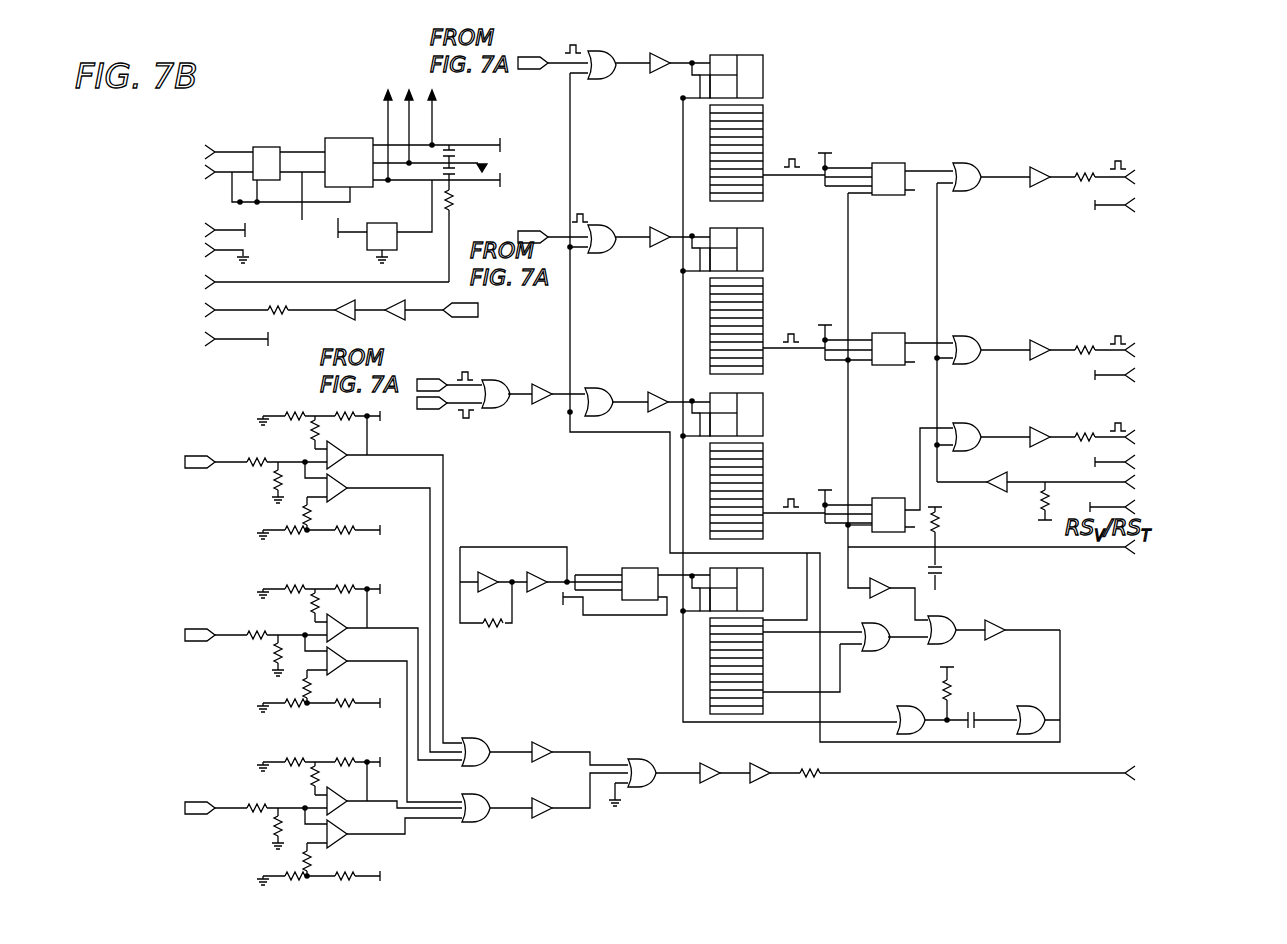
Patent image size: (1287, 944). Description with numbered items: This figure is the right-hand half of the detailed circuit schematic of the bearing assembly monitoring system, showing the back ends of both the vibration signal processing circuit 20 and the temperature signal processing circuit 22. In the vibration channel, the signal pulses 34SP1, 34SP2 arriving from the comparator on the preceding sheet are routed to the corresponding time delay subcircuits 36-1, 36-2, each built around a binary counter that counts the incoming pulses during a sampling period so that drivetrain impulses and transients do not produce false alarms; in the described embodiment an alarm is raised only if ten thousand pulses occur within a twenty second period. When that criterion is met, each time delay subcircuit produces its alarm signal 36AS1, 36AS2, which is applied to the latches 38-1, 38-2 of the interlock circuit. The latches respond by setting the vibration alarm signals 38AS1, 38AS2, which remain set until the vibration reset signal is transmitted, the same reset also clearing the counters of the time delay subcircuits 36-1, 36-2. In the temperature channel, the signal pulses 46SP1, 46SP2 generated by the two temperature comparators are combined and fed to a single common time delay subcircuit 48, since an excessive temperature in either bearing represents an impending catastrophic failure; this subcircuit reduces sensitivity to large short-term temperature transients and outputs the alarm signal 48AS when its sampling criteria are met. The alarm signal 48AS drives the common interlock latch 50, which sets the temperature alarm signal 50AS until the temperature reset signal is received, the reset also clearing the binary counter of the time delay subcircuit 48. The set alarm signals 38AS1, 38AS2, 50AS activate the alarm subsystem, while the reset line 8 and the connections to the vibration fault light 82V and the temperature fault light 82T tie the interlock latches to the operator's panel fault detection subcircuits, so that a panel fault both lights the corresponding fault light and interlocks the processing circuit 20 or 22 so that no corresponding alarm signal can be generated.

The reset signal line 8 is at (1160, 482).
The vibration signal processing circuit 20 is at (1022, 124).
The temperature signal processing circuit 22 is at (598, 492).
The signal pulse 34SP1 is at (590, 42).
The signal pulse 34SP2 is at (582, 211).
The time delay subcircuit 36-1 is at (765, 130).
The time delay subcircuit 36-2 is at (765, 292).
The alarm signal 36AS1 is at (798, 152).
The alarm signal 36AS2 is at (786, 332).
The latch 38-1 is at (892, 162).
The latch 38-2 is at (888, 332).
The vibration alarm signal 38AS1 is at (1122, 160).
The vibration alarm signal 38AS2 is at (1122, 338).
The signal pulse 46SP1 is at (465, 376).
The signal pulse 46SP2 is at (467, 420).
The time delay subcircuit 48 is at (767, 440).
The alarm signal 48AS is at (786, 496).
The interlock subcircuit 50 is at (887, 497).
The temperature alarm signal 50AS is at (1122, 426).
The vibration fault light 82V is at (247, 353).
The temperature fault light 82T is at (1125, 762).